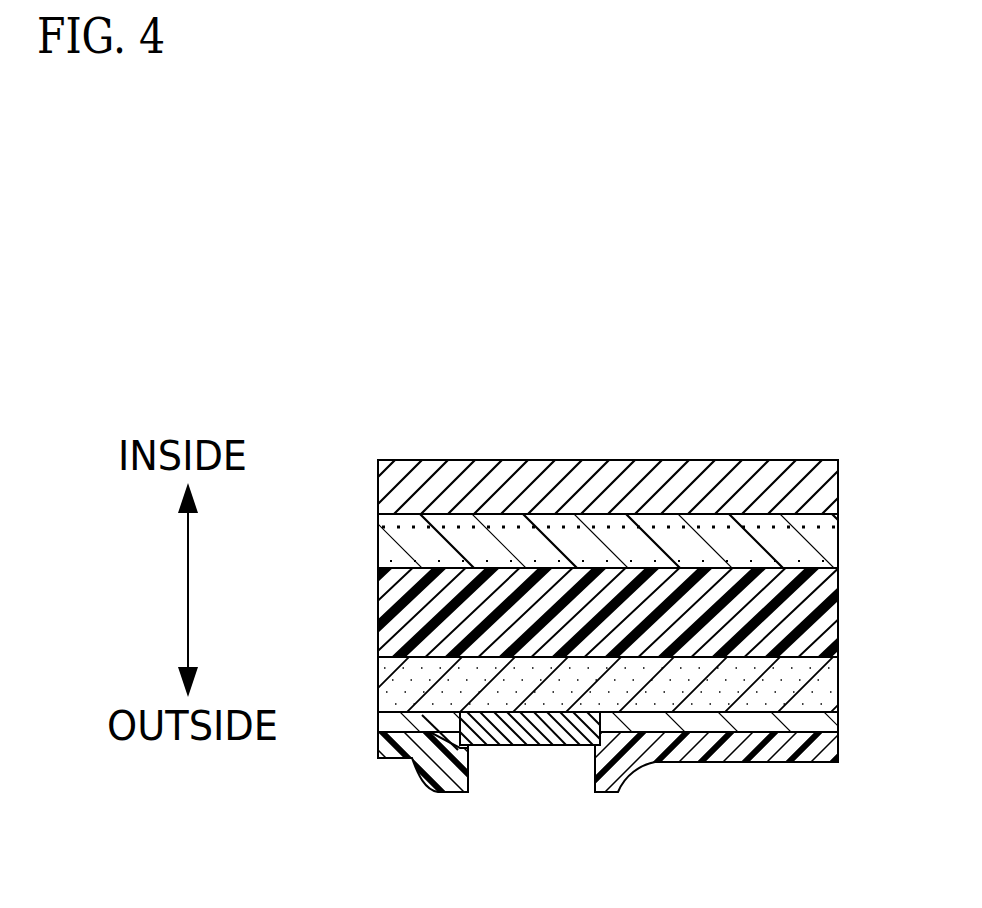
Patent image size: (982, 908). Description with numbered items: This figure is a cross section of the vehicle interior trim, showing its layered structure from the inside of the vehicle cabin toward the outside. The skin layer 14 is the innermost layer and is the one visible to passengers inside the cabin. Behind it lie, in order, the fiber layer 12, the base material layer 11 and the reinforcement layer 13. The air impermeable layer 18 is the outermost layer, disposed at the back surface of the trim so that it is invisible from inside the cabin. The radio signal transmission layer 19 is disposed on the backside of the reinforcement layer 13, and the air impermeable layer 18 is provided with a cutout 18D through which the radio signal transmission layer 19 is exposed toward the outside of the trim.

The base material layer 11 is at (840, 620).
The fiber layer 12 is at (840, 550).
The reinforcement layer 13 is at (840, 678).
The skin layer 14 is at (840, 497).
The air impermeable layer 18 is at (858, 702).
The cutout 18D is at (553, 768).
The radio signal transmission layer 19 is at (492, 750).